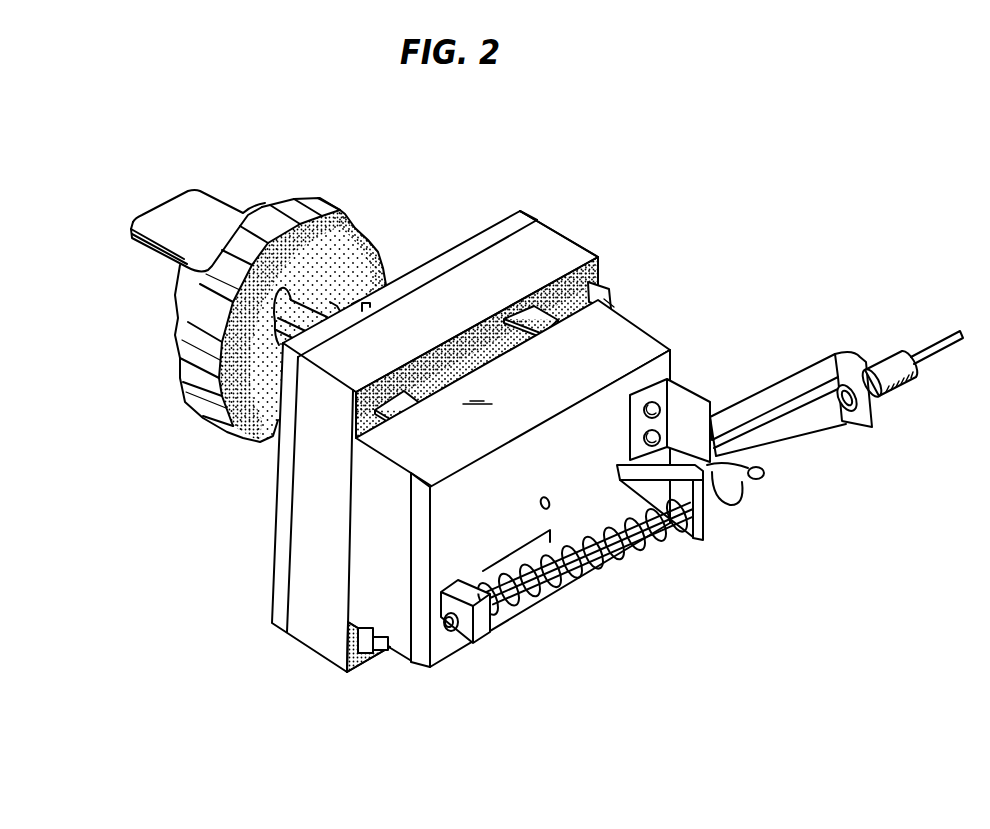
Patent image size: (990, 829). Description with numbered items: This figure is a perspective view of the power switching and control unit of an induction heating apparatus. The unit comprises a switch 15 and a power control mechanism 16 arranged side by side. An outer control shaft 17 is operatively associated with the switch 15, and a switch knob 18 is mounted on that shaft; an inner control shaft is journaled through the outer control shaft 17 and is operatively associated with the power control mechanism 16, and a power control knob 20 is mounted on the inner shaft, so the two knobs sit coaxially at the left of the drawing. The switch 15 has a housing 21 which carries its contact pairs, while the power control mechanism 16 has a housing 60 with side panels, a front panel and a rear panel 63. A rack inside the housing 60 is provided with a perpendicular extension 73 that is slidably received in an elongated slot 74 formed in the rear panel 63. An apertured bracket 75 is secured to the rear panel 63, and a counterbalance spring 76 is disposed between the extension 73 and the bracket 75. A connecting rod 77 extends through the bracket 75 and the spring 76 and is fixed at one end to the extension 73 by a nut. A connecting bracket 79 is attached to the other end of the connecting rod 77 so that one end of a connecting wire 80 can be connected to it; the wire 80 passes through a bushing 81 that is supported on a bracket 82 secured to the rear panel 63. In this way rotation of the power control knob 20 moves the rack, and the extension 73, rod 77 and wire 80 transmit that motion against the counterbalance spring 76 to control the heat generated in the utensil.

The switch 15 is at (563, 223).
The power control mechanism 16 is at (641, 322).
The outer control shaft 17 is at (313, 300).
The switch knob 18 is at (323, 197).
The power control knob 20 is at (203, 200).
The housing 21 is at (583, 252).
The housing 60 is at (656, 332).
The rear panel 63 is at (432, 655).
The perpendicular extension 73 is at (483, 634).
The elongated slot 74 is at (490, 563).
The apertured bracket 75 is at (697, 536).
The counterbalance spring 76 is at (546, 592).
The connecting rod 77 is at (600, 560).
The connecting bracket 79 is at (733, 503).
The connecting wire 80 is at (932, 337).
The bushing 81 is at (898, 398).
The bracket 82 is at (815, 358).